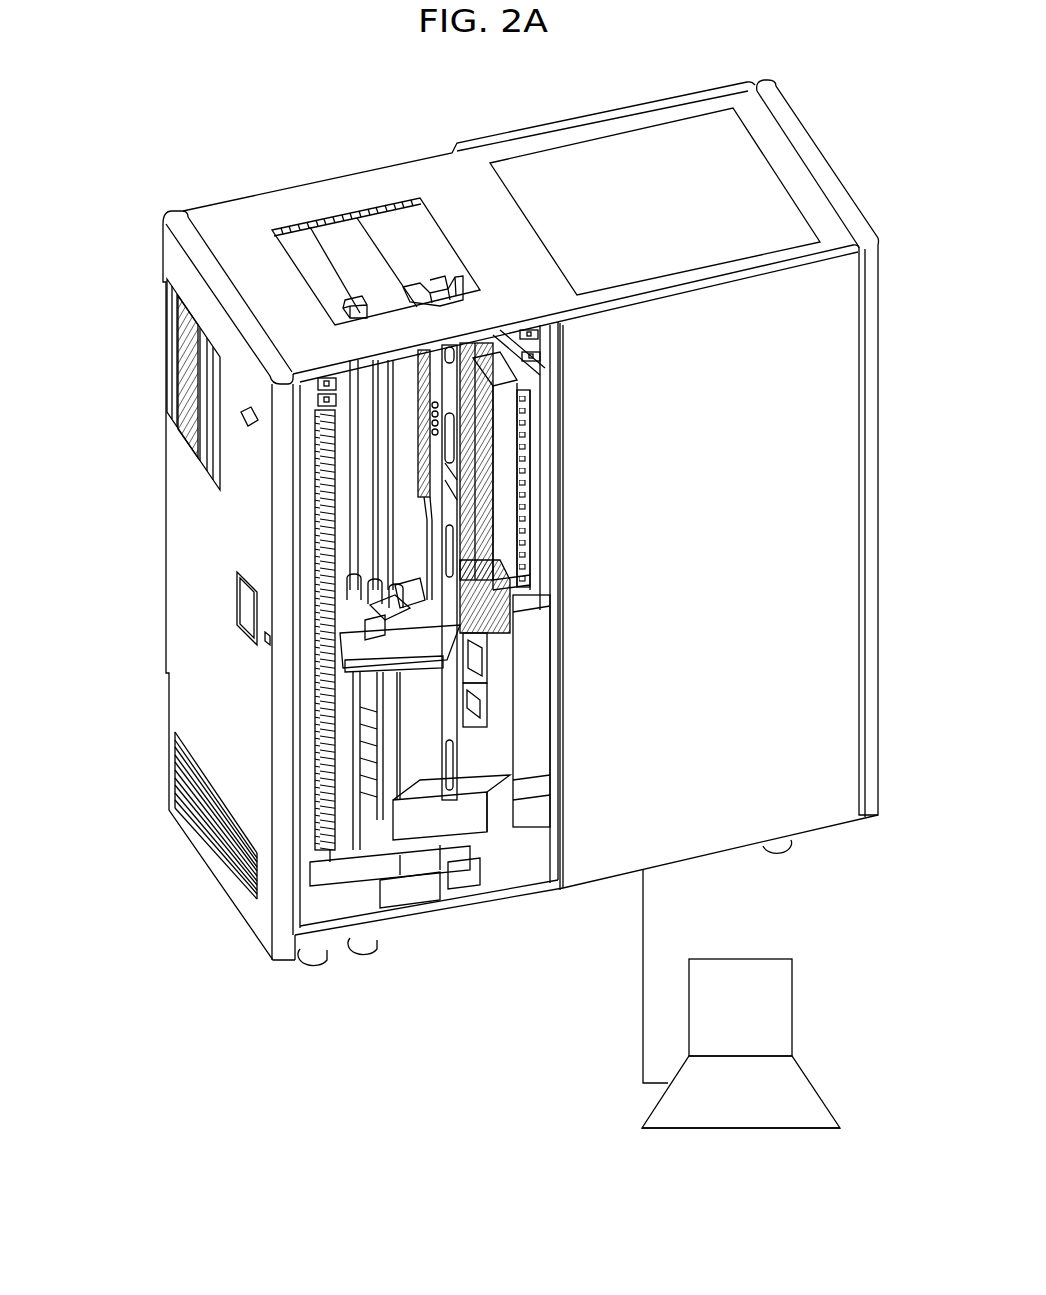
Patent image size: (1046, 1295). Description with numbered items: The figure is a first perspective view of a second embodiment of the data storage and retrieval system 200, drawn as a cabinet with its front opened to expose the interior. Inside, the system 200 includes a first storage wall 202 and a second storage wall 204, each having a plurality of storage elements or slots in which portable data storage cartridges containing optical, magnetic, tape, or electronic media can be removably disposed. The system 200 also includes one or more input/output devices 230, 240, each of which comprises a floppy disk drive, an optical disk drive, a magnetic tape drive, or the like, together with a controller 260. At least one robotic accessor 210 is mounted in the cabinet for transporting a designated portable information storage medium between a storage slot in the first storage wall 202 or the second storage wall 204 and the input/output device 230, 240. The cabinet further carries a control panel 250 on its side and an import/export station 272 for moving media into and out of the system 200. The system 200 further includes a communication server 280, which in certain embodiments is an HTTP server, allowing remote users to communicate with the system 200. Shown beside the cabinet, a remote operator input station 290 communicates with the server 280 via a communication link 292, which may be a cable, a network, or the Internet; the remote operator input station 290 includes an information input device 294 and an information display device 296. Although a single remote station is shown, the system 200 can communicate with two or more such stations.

The data storage and retrieval system 200 is at (350, 958).
The first storage wall 202 is at (490, 428).
The second storage wall 204 is at (317, 500).
The robotic accessor 210 is at (407, 873).
The input/output device 230 is at (502, 680).
The input/output device 240 is at (502, 722).
The control panel 250 is at (193, 372).
The controller 260 is at (500, 652).
The import/export station 272 is at (203, 418).
The communication server 280 is at (527, 763).
The remote operator input station 290 is at (653, 1112).
The communication link 292 is at (643, 990).
The information input device 294 is at (730, 1115).
The information display device 296 is at (778, 1002).